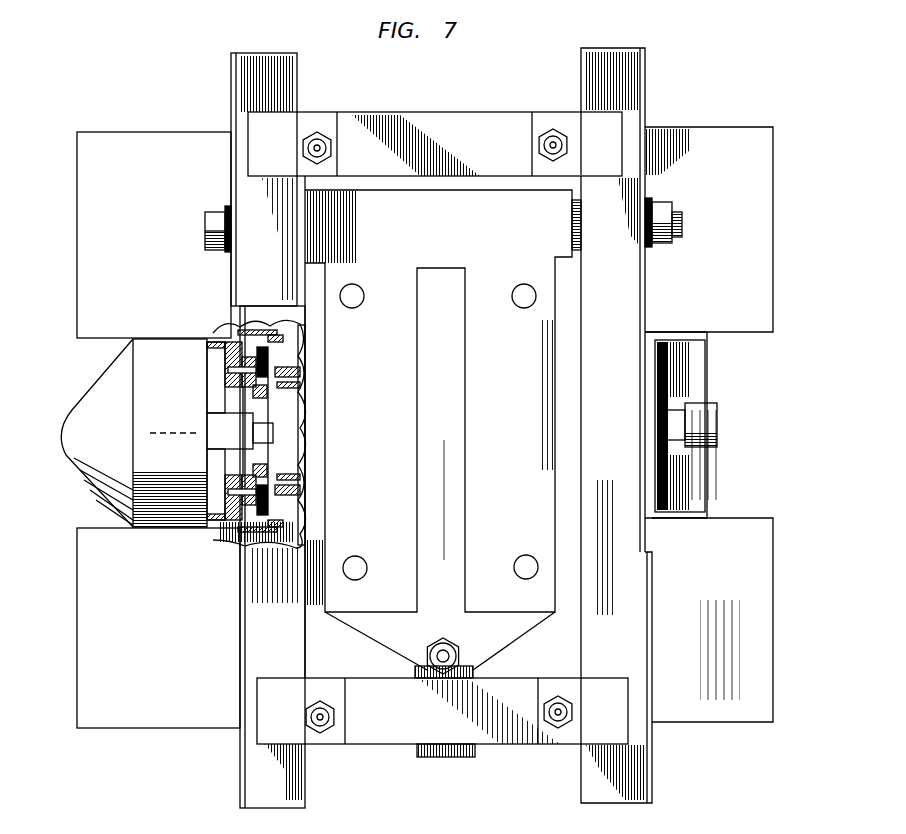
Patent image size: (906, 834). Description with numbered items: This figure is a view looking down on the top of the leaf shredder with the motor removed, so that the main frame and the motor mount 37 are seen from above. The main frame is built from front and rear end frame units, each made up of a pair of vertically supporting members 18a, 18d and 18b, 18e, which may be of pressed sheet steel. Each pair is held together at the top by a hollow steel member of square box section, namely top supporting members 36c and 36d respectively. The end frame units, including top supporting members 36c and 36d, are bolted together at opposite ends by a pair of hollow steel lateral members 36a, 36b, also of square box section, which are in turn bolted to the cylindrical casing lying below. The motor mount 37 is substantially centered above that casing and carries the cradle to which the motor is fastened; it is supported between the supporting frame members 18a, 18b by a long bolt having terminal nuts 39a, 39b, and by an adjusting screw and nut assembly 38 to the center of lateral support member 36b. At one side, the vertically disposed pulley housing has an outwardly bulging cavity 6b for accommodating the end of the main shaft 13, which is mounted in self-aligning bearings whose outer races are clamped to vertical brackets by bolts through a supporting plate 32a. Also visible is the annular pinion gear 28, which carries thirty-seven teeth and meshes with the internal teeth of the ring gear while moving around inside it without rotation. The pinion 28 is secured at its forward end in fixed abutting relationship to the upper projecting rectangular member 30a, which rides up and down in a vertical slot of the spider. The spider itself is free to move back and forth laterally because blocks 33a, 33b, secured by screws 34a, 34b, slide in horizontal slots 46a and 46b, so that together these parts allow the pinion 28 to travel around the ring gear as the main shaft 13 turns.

The outwardly bulging cavity 6b is at (72, 428).
The main shaft 13 is at (715, 410).
The vertically supporting member 18a is at (240, 766).
The vertically supporting member 18b is at (652, 780).
The vertically supporting member 18d is at (231, 74).
The vertically supporting member 18e is at (645, 76).
The annular pinion gear 28 is at (296, 392).
The projecting rectangular member 30a is at (275, 428).
The supporting plate 32a is at (240, 528).
The block 33a is at (222, 370).
The block 33b is at (262, 545).
The screw 34a is at (293, 365).
The screw 34b is at (300, 495).
The lateral member 36a is at (490, 720).
The lateral member 36b is at (500, 130).
The top supporting member 36c is at (305, 655).
The top supporting member 36d is at (600, 648).
The motor mount 37 is at (425, 220).
The adjusting screw and nut assembly 38 is at (428, 648).
The terminal nut 39a is at (215, 212).
The terminal nut 39b is at (665, 208).
The horizontal slot 46a is at (258, 335).
The horizontal slot 46b is at (285, 470).